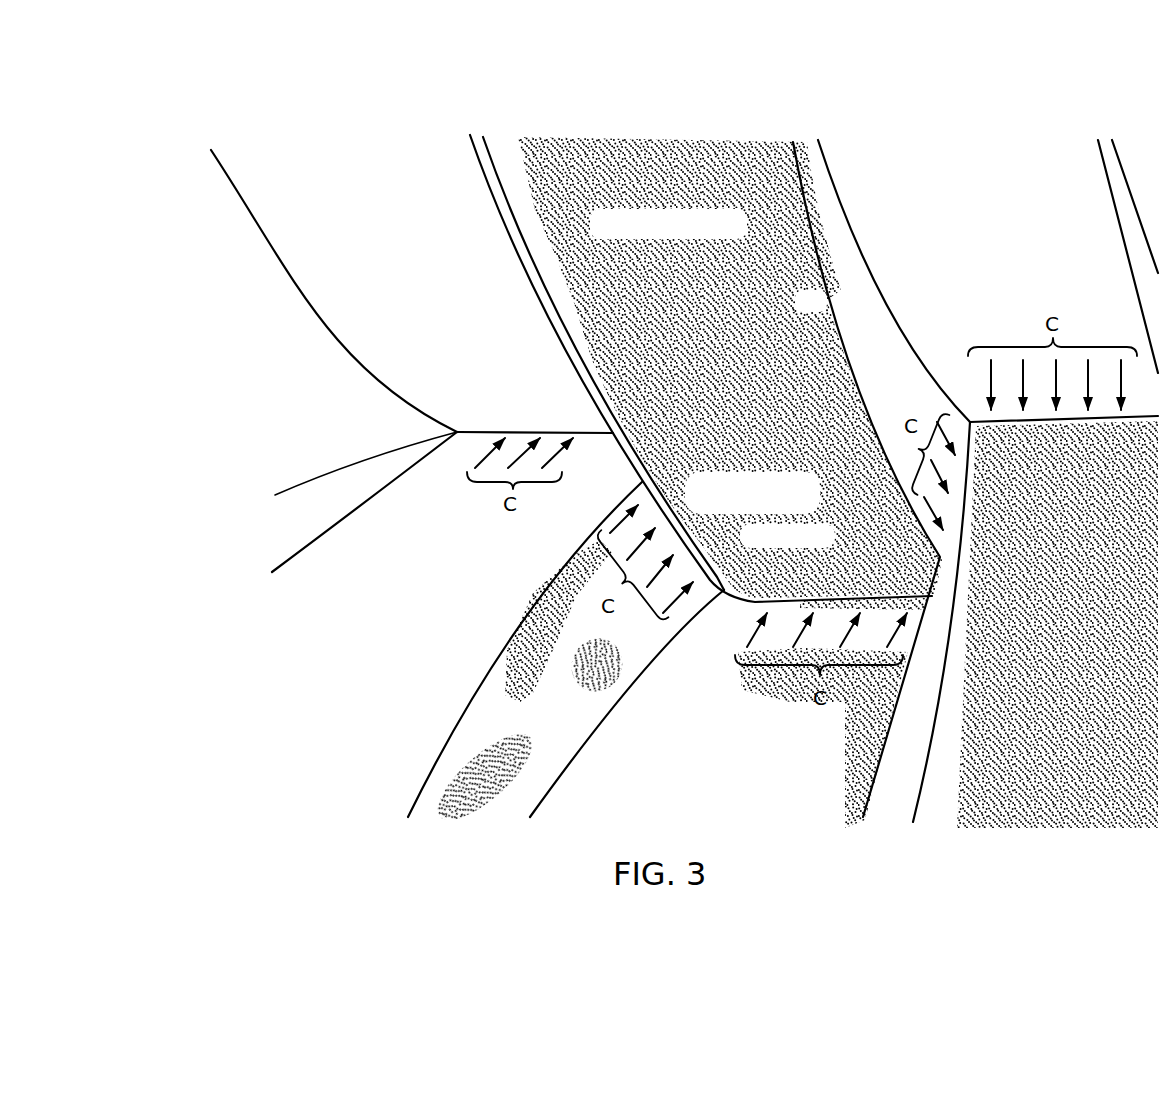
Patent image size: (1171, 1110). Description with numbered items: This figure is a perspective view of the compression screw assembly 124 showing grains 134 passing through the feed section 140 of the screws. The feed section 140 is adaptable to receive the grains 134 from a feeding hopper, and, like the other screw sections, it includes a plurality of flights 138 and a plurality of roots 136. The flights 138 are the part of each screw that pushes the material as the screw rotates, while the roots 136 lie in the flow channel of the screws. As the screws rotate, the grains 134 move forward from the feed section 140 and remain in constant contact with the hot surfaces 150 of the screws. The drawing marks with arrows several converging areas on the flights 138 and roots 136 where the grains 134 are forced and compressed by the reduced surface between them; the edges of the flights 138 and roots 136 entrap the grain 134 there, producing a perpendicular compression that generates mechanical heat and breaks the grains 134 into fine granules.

The compression screw assembly 124 is at (328, 405).
The grains 134 is at (762, 210).
The roots 136 is at (262, 215).
The flights 138 is at (532, 225).
The feed section 140 is at (1048, 128).
The hot surfaces 150 is at (501, 376).